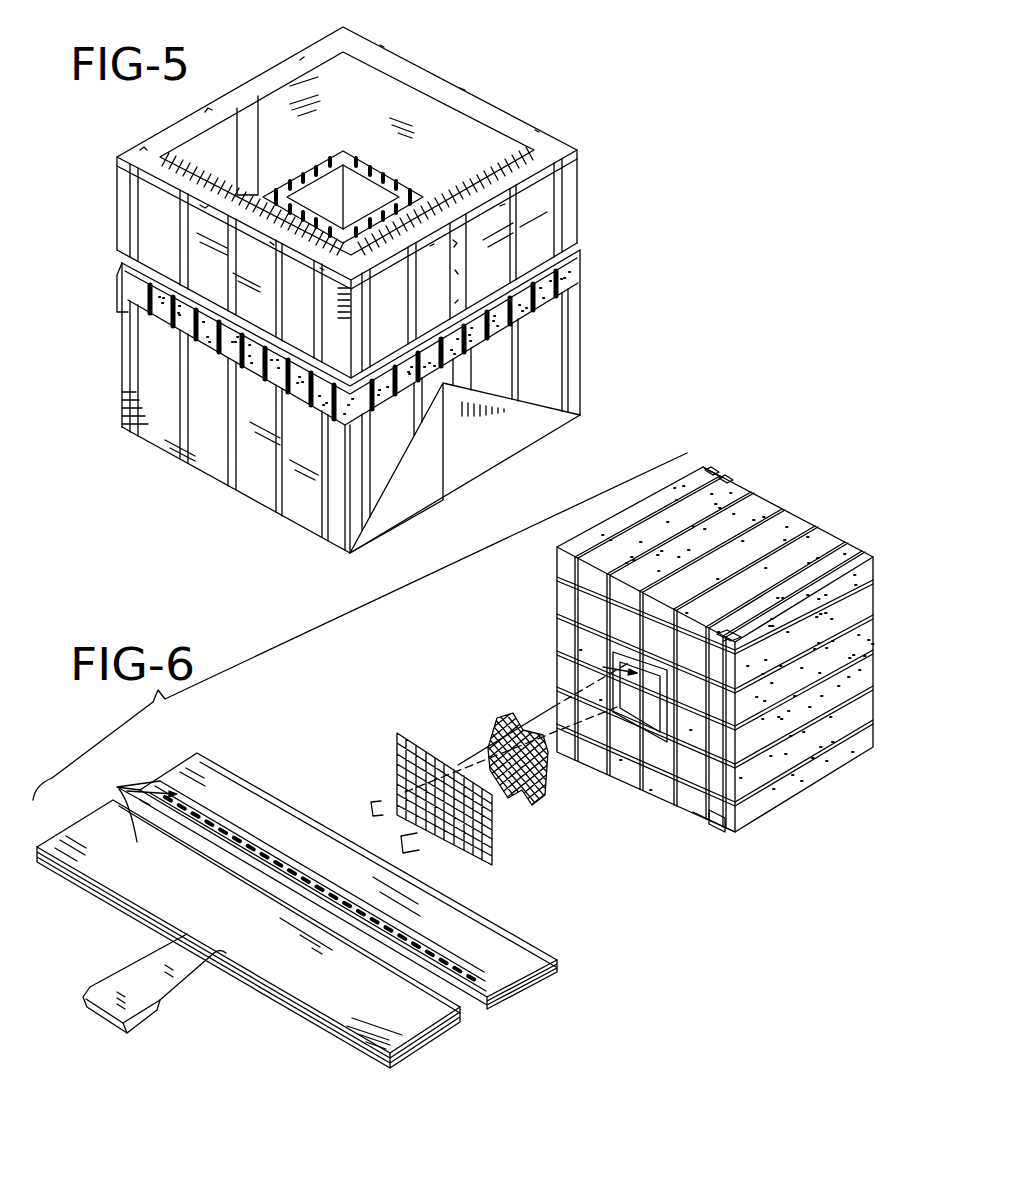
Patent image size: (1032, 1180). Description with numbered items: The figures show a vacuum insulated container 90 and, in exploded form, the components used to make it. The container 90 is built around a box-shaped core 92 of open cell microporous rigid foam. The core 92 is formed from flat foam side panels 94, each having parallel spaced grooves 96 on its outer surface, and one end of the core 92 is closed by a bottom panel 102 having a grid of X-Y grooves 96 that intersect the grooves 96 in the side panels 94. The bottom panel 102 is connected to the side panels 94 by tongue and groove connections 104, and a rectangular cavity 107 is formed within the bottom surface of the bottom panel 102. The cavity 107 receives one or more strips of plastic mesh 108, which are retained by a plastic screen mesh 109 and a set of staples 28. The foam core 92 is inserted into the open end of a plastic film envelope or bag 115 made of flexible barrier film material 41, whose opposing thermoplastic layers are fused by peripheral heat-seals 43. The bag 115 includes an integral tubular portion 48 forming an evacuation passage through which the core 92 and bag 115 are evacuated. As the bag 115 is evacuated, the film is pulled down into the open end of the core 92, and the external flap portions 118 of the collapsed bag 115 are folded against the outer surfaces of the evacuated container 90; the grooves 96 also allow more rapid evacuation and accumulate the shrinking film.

In FIG. 6, the staples 28 is at (367, 818).
In FIG. 6, the barrier film material 41 is at (132, 800).
In FIG. 5, the peripheral heat-seals 43 is at (262, 108).
In FIG. 6, the tubular portion 48 is at (157, 980).
In FIG. 5, the vacuum insulated container 90 is at (476, 84).
In FIG. 5, the core 92 is at (150, 312).
In FIG. 6, the core 92 is at (787, 500).
In FIG. 6, the side panels 94 is at (847, 637).
In FIG. 6, the grooves 96 is at (727, 500).
In FIG. 6, the bottom panel 102 is at (690, 780).
In FIG. 6, the tongue and groove connections 104 is at (735, 815).
In FIG. 6, the cavity 107 is at (617, 658).
In FIG. 6, the plastic mesh 108 is at (492, 733).
In FIG. 6, the plastic screen mesh 109 is at (418, 750).
In FIG. 5, the bag 115 is at (343, 70).
In FIG. 6, the bag 115 is at (476, 1022).
In FIG. 5, the external flap portions 118 is at (483, 440).